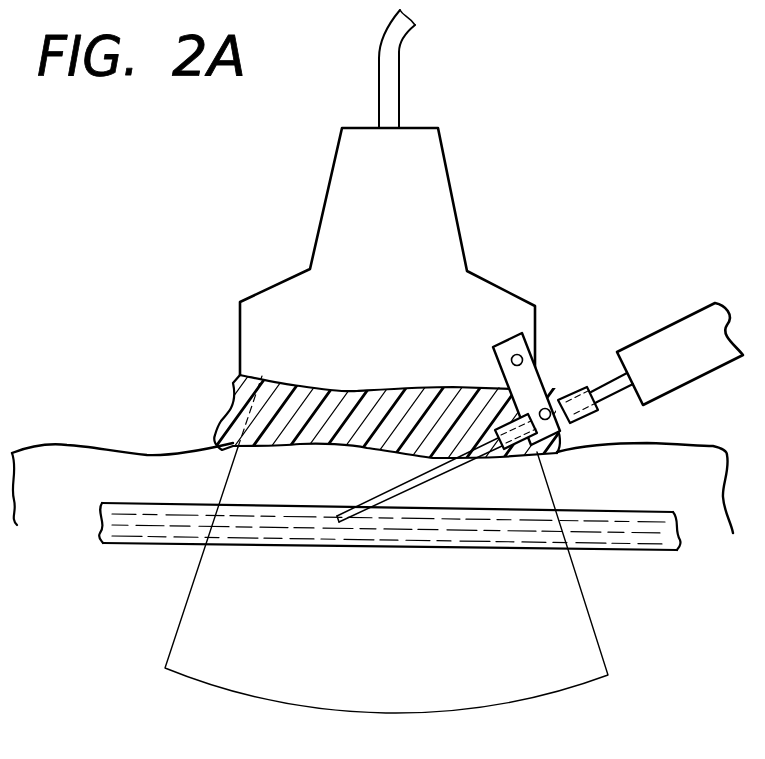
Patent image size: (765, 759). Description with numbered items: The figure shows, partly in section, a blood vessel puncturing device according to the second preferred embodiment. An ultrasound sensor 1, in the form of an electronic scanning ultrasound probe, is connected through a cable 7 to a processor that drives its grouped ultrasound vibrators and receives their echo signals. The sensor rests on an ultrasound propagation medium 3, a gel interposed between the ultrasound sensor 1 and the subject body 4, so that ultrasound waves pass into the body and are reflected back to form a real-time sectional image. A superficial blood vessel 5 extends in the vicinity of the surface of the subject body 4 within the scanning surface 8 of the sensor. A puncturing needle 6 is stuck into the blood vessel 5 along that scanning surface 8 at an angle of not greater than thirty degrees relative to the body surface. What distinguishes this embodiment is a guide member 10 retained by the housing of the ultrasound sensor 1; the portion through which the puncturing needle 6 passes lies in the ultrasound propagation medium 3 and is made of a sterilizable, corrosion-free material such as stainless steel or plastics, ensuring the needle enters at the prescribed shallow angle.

The ultrasound sensor 1 is at (438, 201).
The ultrasound propagation medium 3 is at (283, 383).
The subject body 4 is at (105, 455).
The superficial blood vessel 5 is at (645, 552).
The puncturing needle 6 is at (610, 395).
The cable 7 is at (392, 58).
The scanning surface 8 is at (195, 593).
The guide member 10 is at (568, 390).